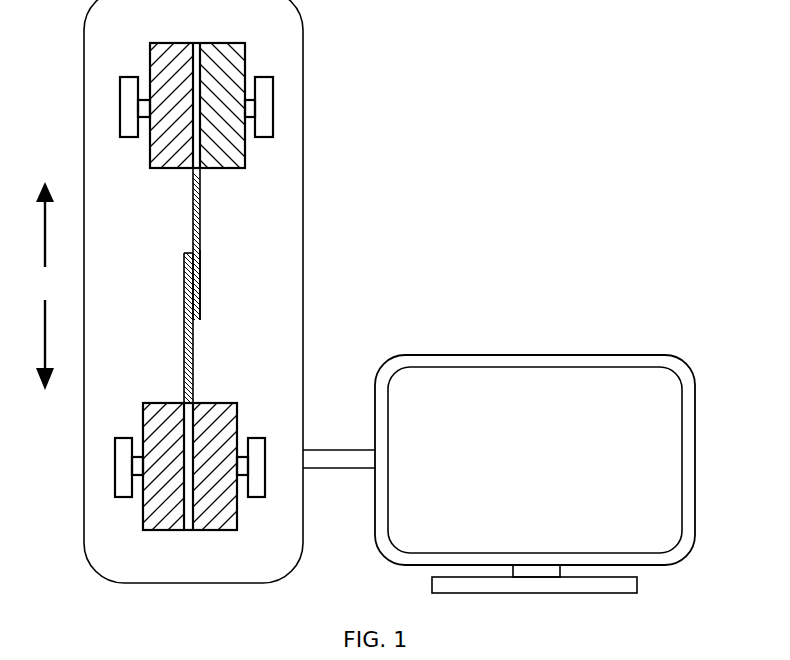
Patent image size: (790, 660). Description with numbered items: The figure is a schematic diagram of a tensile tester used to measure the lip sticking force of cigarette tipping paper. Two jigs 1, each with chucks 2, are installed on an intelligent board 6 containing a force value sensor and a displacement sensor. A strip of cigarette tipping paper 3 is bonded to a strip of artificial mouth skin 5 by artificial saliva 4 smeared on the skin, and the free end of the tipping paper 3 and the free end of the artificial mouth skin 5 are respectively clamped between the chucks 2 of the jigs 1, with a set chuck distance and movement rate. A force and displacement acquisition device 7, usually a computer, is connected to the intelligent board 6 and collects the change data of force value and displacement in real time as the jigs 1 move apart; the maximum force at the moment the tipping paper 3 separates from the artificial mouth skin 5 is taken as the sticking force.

The jigs 1 is at (160, 525).
The chucks 2 is at (262, 110).
The cigarette tipping paper 3 is at (192, 240).
The artificial saliva for smearing 4 is at (201, 287).
The artificial mouth skin 5 is at (183, 277).
The intelligent board containing force sensors and displacement sensors 6 is at (237, 235).
The force and displacement acquisition device 7 is at (658, 510).